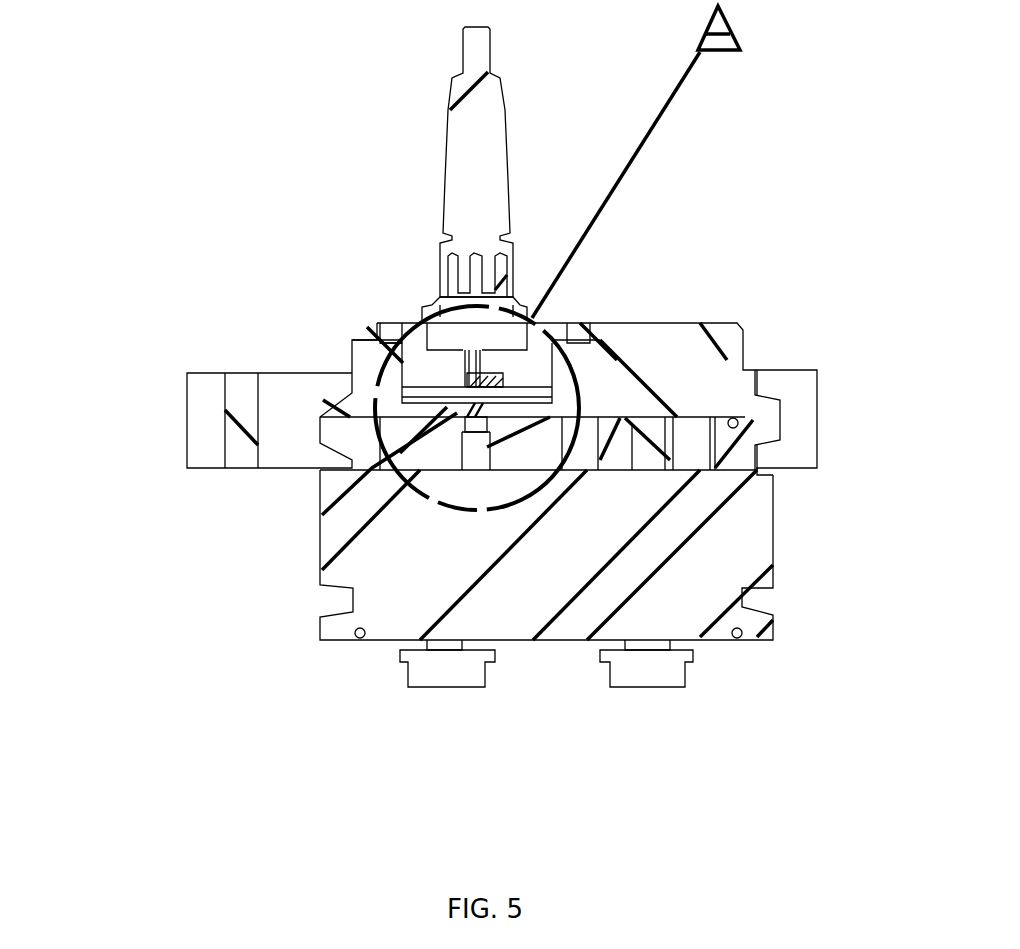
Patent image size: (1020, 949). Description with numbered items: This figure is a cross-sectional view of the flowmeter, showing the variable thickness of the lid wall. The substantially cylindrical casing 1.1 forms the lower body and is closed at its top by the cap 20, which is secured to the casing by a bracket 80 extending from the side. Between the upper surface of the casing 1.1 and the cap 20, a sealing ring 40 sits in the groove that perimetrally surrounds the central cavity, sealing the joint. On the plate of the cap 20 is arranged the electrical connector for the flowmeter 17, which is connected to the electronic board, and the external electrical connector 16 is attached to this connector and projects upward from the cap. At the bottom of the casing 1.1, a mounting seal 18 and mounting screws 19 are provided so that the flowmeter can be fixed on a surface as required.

The external electrical connector 16 is at (438, 105).
The electrical connector for the flowmeter 17 is at (456, 324).
The cap 20 is at (657, 349).
The sealing ring 40 is at (740, 419).
The bracket 80 is at (183, 400).
The casing 1.1 is at (381, 558).
The mounting seal 18 is at (357, 646).
The mounting screws 19 is at (692, 686).